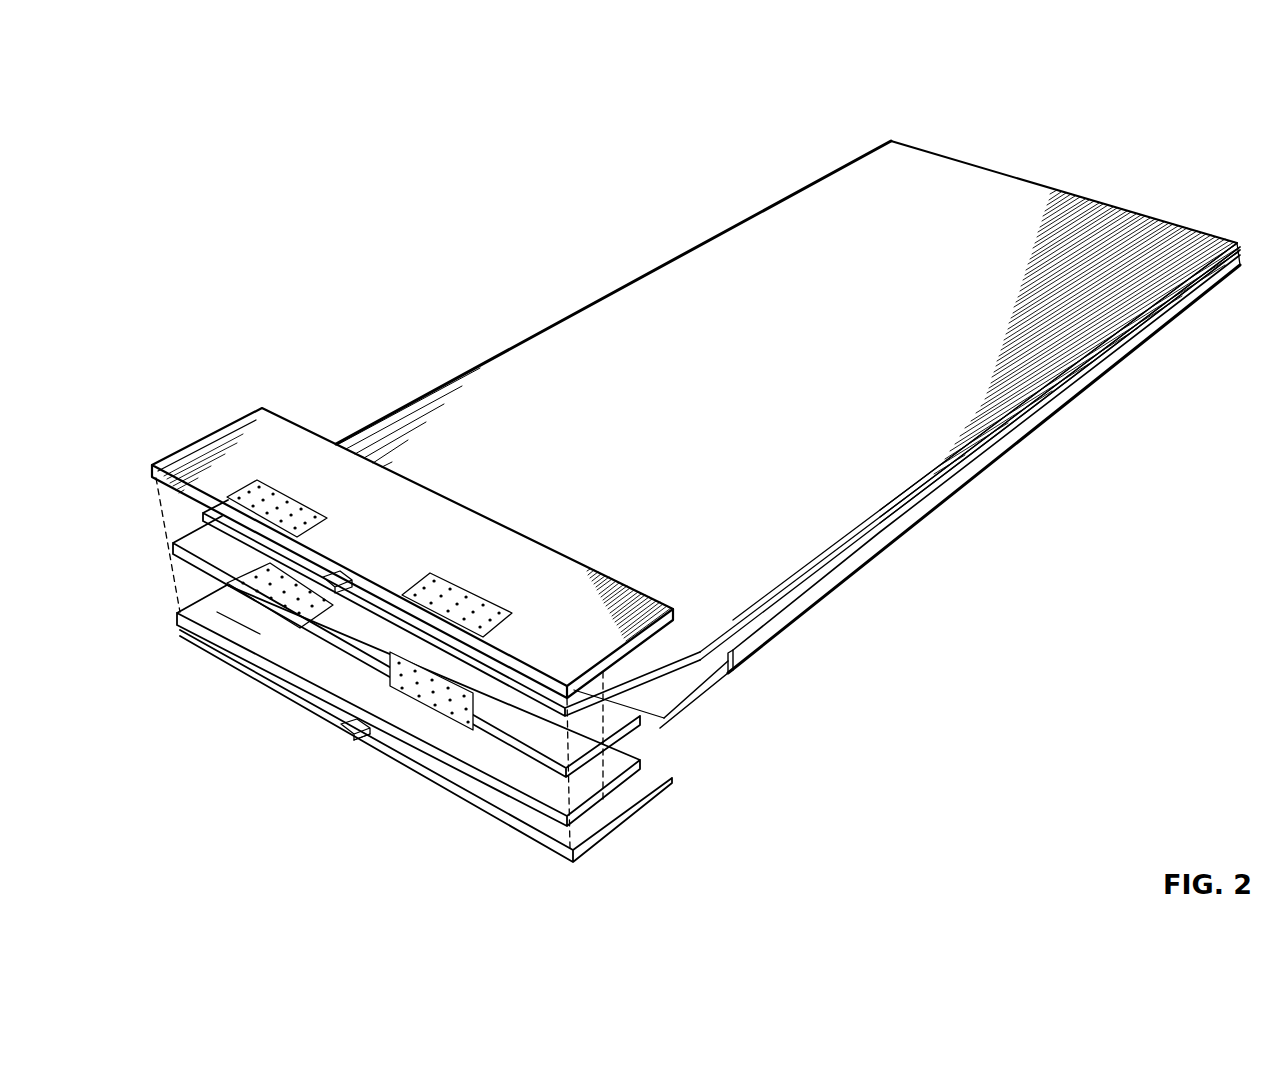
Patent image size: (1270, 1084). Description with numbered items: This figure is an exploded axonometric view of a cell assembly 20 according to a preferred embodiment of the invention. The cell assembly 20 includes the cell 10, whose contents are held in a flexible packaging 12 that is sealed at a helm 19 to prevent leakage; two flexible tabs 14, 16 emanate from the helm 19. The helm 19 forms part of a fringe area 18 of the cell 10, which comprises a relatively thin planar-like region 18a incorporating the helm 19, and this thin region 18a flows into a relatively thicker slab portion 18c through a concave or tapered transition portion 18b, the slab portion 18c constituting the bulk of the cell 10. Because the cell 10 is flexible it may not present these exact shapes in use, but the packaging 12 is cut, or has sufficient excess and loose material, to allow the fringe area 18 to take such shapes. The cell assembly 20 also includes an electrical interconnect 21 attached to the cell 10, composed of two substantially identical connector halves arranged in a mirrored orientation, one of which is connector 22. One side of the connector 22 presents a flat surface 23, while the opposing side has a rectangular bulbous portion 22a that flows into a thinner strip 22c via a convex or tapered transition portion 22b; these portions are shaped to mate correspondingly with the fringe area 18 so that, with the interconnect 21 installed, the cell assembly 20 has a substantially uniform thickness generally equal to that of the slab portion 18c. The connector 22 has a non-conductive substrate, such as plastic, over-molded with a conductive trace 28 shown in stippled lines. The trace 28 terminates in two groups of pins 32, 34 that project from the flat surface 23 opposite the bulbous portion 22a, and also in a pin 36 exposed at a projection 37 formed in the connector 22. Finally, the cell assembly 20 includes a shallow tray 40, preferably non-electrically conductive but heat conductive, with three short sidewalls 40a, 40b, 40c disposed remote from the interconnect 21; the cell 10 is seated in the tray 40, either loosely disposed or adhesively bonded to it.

The cell 10 is at (1053, 210).
The flexible packaging 12 is at (755, 235).
The flexible tab 14 is at (380, 686).
The flexible tab 16 is at (218, 514).
The fringe area 18 is at (1003, 841).
The relatively thin planar-like region 18a is at (628, 785).
The concave or tapered transition portion 18b is at (618, 742).
The slab portion 18c is at (667, 642).
The helm 19 is at (618, 683).
The cell assembly 20 is at (472, 188).
The electrical interconnect 21 is at (217, 615).
The connector half 22 is at (299, 377).
The rectangular bulbous portion 22a is at (607, 792).
The convex or tapered transition portion 22b is at (582, 822).
The thinner strip 22c is at (655, 780).
The flat surface 23 is at (290, 447).
The conductive trace 28 is at (455, 760).
The group of pins 32 is at (237, 490).
The group of pins 34 is at (443, 587).
The pin 36 is at (353, 737).
The projection 37 is at (370, 740).
The tray 40 is at (932, 521).
The short sidewall 40a is at (963, 482).
The short sidewall 40b is at (1188, 227).
The short sidewall 40c is at (814, 181).